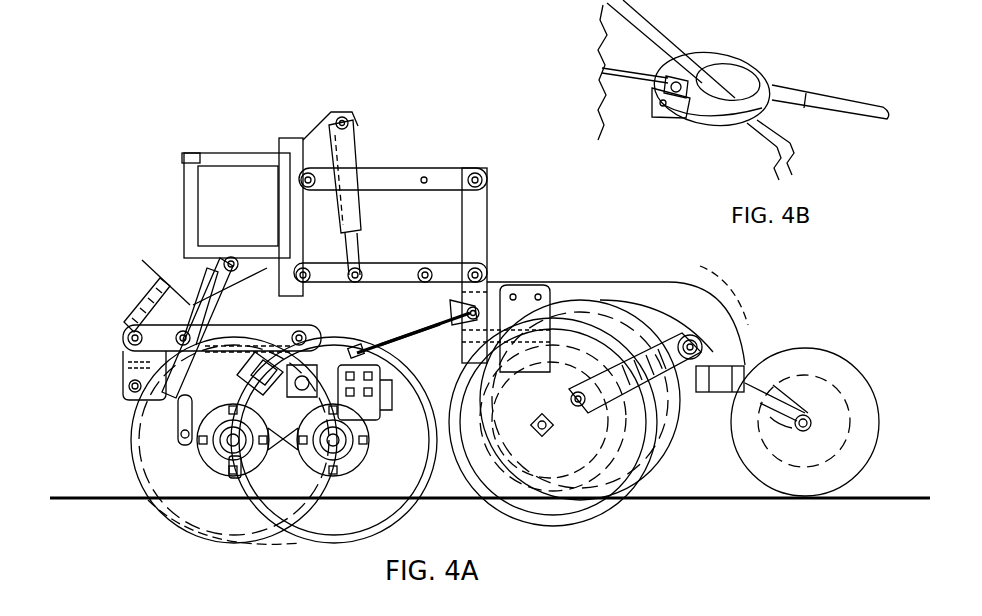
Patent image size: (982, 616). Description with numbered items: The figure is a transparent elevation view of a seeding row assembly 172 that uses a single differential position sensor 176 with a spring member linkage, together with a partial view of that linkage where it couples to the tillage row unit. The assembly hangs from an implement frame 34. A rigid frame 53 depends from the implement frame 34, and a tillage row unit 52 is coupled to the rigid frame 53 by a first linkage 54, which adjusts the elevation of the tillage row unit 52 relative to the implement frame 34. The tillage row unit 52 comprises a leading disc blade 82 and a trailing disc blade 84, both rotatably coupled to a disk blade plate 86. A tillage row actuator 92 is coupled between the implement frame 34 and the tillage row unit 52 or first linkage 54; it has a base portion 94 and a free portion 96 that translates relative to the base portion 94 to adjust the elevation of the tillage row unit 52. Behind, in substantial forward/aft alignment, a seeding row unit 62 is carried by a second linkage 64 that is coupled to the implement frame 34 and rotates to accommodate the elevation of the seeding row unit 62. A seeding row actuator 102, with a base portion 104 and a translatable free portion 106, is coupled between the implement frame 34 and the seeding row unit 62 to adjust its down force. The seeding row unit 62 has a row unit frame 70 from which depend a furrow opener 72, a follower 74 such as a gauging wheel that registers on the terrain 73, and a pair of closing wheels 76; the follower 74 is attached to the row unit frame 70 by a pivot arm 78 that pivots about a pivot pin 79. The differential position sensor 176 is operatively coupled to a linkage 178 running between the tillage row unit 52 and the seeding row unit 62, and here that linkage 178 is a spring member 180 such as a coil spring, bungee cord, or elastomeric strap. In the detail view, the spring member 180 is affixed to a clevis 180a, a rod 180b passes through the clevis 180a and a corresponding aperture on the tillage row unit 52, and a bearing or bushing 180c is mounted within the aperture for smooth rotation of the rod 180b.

In FIG. 4A, the seeding row assembly 172 is at (148, 121).
In FIG. 4A, the implement frame 34 is at (180, 190).
In FIG. 4A, the base portion 104 is at (346, 118).
In FIG. 4A, the seeding row actuator 102 is at (360, 160).
In FIG. 4A, the free portion 106 is at (372, 268).
In FIG. 4A, the second linkage 64 is at (455, 250).
In FIG. 4A, the linkage 178 is at (474, 268).
In FIG. 4A, the spring member 180 is at (410, 334).
In FIG. 4B, the spring member 180 is at (711, 90).
In FIG. 4A, the differential position sensor 176 is at (477, 285).
In FIG. 4A, the rigid frame 53 is at (133, 325).
In FIG. 4A, the free portion 96 is at (124, 378).
In FIG. 4A, the first linkage 54 is at (158, 318).
In FIG. 4A, the tillage row actuator 92 is at (168, 282).
In FIG. 4A, the base portion 94 is at (188, 267).
In FIG. 4A, the tillage row unit 52 is at (259, 451).
In FIG. 4B, the tillage row unit 52 is at (644, 10).
In FIG. 4A, the leading disc blade 82 is at (160, 514).
In FIG. 4A, the trailing disc blade 84 is at (378, 518).
In FIG. 4A, the disk blade plate 86 is at (252, 530).
In FIG. 4A, the terrain 73 is at (55, 497).
In FIG. 4A, the seeding row unit 62 is at (701, 287).
In FIG. 4A, the pivot pin 79 is at (735, 300).
In FIG. 4A, the furrow opener 72 is at (553, 518).
In FIG. 4A, the follower 74 is at (640, 469).
In FIG. 4A, the row unit frame 70 is at (735, 323).
In FIG. 4A, the pivot arm 78 is at (745, 352).
In FIG. 4A, the closing wheels 76 is at (852, 378).
In FIG. 4B, the clevis 180a is at (745, 60).
In FIG. 4B, the rod 180b is at (718, 55).
In FIG. 4B, the bearing or bushing 180c is at (602, 71).